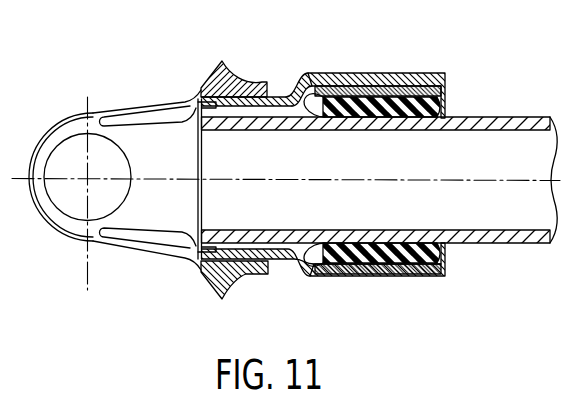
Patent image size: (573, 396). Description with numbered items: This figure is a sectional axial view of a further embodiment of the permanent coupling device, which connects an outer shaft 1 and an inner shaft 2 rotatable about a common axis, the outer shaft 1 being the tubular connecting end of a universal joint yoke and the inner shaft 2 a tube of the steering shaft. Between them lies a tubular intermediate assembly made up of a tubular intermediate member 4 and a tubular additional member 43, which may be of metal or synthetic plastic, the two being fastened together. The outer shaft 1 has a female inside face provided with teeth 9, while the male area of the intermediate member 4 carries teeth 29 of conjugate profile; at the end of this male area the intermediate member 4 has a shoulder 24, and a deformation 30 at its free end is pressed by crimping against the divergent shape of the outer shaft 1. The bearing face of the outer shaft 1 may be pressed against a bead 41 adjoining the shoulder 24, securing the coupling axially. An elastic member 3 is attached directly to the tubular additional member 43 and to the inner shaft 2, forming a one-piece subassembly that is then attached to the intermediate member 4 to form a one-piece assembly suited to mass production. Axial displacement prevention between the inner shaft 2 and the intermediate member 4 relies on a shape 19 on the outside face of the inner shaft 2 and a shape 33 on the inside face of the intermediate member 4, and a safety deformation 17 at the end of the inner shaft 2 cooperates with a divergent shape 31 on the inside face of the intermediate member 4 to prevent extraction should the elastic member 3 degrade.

The outer shaft 1 is at (206, 70).
The inner shaft 2 is at (492, 242).
The elastic member 3 is at (408, 289).
The tubular intermediate member 4 is at (324, 72).
The teeth 9 is at (238, 119).
The deformation 17 is at (198, 253).
The shape 19 is at (290, 272).
The shoulder 24 is at (304, 76).
The teeth 29 is at (250, 279).
The deformation 30 is at (196, 98).
The divergent shape 31 is at (190, 124).
The shape 33 is at (270, 108).
The bead 41 is at (276, 95).
The tubular additional member 43 is at (324, 292).